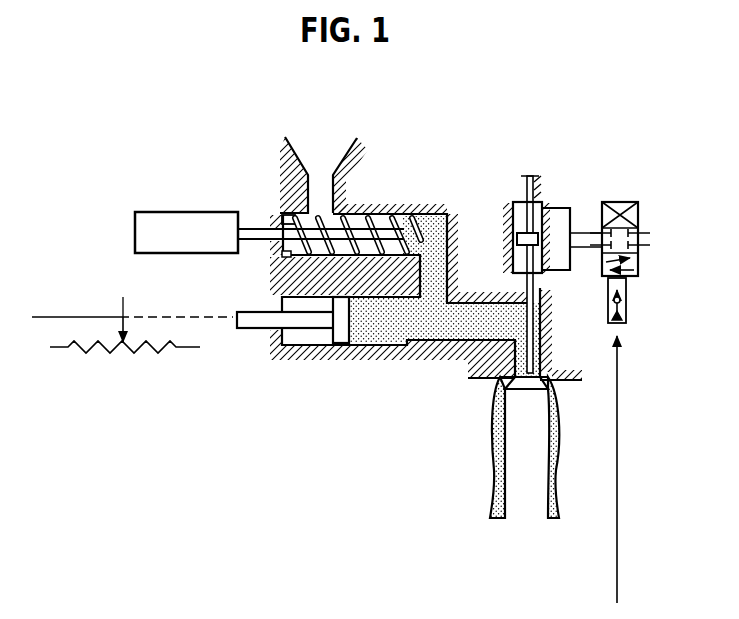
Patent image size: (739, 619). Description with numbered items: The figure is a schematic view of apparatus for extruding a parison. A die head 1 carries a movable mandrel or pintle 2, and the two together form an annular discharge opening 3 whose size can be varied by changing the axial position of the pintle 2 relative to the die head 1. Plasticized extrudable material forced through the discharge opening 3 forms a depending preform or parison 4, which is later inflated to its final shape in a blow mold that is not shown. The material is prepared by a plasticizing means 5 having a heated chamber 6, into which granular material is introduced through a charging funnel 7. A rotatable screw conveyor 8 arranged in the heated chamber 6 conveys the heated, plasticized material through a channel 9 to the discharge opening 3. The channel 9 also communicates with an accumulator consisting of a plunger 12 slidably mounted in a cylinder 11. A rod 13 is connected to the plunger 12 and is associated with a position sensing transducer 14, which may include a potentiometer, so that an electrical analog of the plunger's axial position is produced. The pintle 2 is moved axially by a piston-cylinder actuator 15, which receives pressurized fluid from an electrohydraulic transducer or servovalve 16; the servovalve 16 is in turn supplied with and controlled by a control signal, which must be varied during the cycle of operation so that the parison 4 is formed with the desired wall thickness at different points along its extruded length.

The die head 1 is at (562, 384).
The pintle 2 is at (528, 391).
The discharge opening 3 is at (548, 372).
The parison 4 is at (554, 457).
The plasticizing means 5 is at (281, 208).
The heated chamber 6 is at (282, 253).
The charging funnel 7 is at (356, 154).
The screw conveyor 8 is at (378, 256).
The channel 9 is at (438, 280).
The cylinder 11 is at (282, 300).
The plunger 12 is at (340, 333).
The rod 13 is at (258, 320).
The position sensing transducer 14 is at (85, 312).
The piston-cylinder actuator 15 is at (546, 198).
The servovalve 16 is at (617, 201).